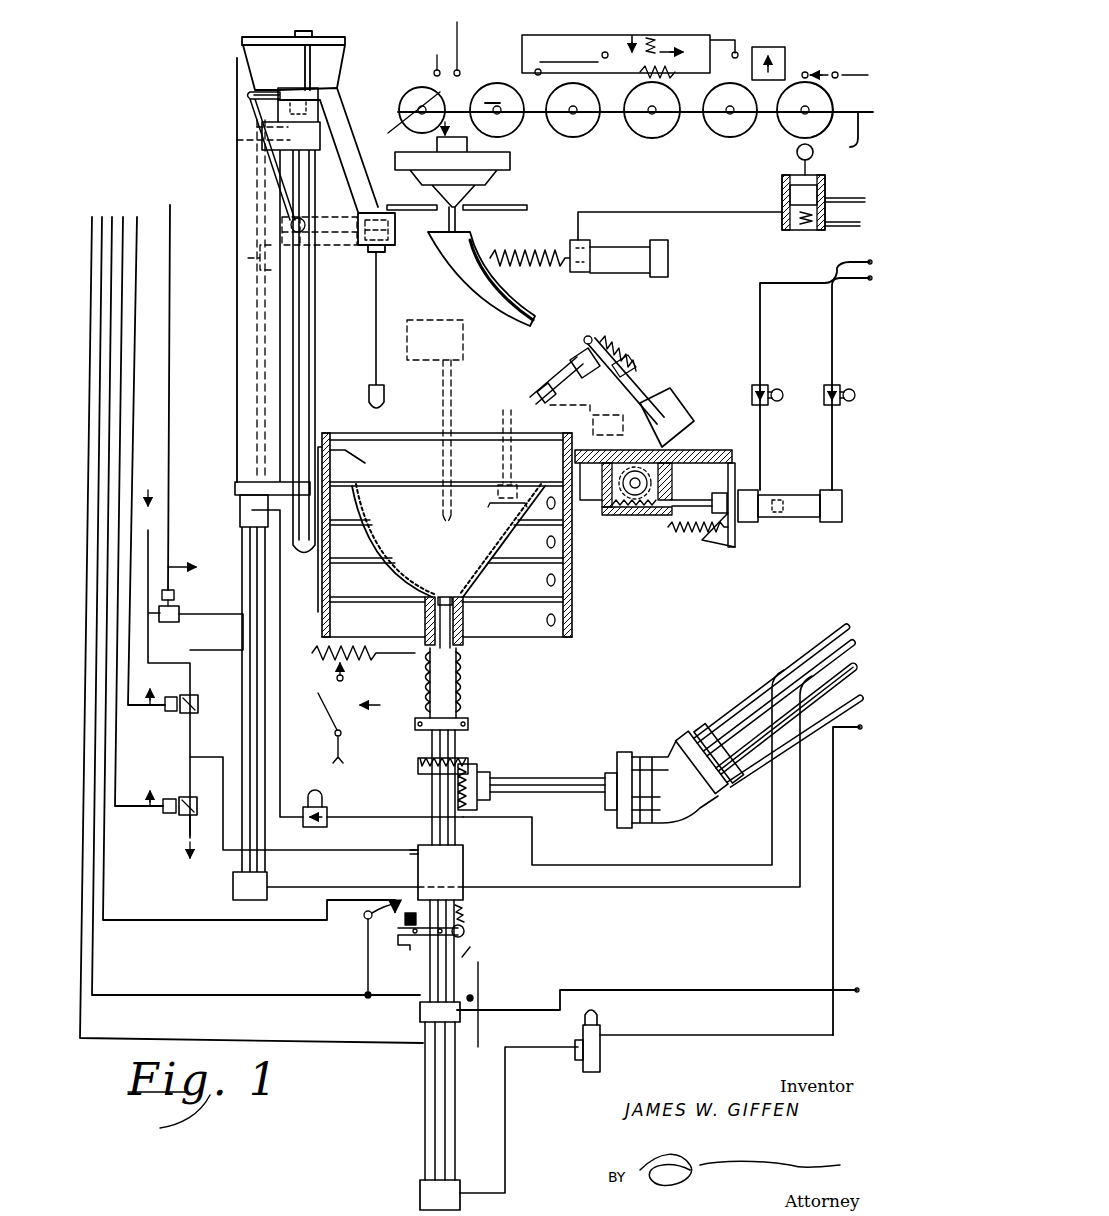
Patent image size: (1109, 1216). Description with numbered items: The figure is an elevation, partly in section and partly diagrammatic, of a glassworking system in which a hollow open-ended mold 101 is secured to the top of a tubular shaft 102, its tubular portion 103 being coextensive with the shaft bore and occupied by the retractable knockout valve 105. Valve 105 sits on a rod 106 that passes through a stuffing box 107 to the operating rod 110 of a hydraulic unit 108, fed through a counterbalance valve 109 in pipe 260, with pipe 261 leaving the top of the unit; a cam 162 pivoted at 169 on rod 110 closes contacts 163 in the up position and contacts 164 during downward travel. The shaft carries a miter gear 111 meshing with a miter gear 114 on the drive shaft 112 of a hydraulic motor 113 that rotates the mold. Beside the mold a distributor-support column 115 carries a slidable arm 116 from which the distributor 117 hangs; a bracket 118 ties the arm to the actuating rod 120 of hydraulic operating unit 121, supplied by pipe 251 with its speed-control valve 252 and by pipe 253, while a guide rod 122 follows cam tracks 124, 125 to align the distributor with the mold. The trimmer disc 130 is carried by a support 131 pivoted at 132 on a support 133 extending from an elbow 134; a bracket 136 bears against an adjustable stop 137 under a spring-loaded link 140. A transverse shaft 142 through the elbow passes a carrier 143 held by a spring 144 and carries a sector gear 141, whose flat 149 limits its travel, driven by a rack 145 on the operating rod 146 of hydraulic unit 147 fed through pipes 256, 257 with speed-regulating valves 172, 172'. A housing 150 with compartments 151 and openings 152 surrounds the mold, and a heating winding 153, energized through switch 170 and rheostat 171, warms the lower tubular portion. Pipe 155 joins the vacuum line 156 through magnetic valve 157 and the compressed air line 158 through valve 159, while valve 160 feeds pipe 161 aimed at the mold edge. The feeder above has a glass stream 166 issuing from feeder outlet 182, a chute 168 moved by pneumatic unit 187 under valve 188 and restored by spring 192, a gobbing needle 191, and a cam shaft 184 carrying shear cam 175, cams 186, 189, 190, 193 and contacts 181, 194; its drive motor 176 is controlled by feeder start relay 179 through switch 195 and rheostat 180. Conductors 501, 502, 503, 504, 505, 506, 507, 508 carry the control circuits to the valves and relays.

The mold 101 is at (392, 456).
The tubular shaft 102 is at (432, 761).
The tubular portion 103 is at (460, 650).
The valve 105 is at (466, 553).
The rod 106 is at (440, 626).
The stuffing box 107 is at (455, 878).
The hydraulic unit 108 is at (428, 1041).
The counterbalance valve 109 is at (600, 1058).
The operating rod 110 is at (437, 972).
The miter gear 111 is at (464, 760).
The drive shaft 112 is at (560, 797).
The hydraulic motor 113 is at (665, 757).
The miter gear 114 is at (478, 782).
The distributor-support column 115 is at (308, 322).
The arm 116 is at (357, 168).
The distributor 117 is at (384, 390).
The bracket 118 is at (248, 141).
The actuating rod 120 is at (258, 212).
The hydraulic operating unit 121 is at (242, 661).
The guide rod 122 is at (250, 94).
The cam track 124 is at (242, 63).
The cam track 125 is at (330, 63).
The disc 130 is at (537, 395).
The support 131 is at (563, 367).
The pivot 132 is at (585, 341).
The support 133 is at (642, 390).
The elbow 134 is at (668, 422).
The bracket 136 is at (578, 380).
The stop 137 is at (620, 338).
The spring-loaded link 140 is at (640, 352).
The sector gear 141 is at (638, 488).
The transverse shaft 142 is at (650, 495).
The carrier 143 is at (596, 470).
The spring 144 is at (690, 534).
The rack 145 is at (680, 550).
The operating rod 146 is at (705, 500).
The hydraulic unit 147 is at (800, 517).
The flat 149 is at (648, 490).
The housing 150 is at (560, 638).
The compartment 151 is at (560, 602).
The opening 152 is at (560, 645).
The heating winding 153 is at (462, 680).
The pipe 155 is at (325, 851).
The vacuum line 156 is at (185, 830).
The magnetic valve 157 is at (190, 797).
The compressed air line 158 is at (150, 545).
The magnetic valve 159 is at (198, 703).
The valve 160 is at (174, 610).
The pipe 161 is at (228, 618).
The cam 162 is at (468, 918).
The contacts 163 is at (381, 950).
The contacts 164 is at (476, 962).
The glass stream 166 is at (452, 228).
The chute 168 is at (458, 262).
The pivot 169 is at (465, 933).
The switch 170 is at (317, 713).
The rheostat 171 is at (340, 660).
The speed-regulating valve 172 is at (820, 416).
The speed-regulating valve 172' is at (790, 382).
The shear cam 175 is at (669, 105).
The drive motor 176 is at (409, 77).
The feeder start relay 179 is at (628, 38).
The rheostat 180 is at (640, 85).
The contacts 181 is at (600, 80).
The feeder outlet 182 is at (492, 200).
The cam shaft 184 is at (850, 157).
The cam 186 is at (590, 105).
The pneumatic unit 187 is at (640, 255).
The valve 188 is at (782, 192).
The cam 189 is at (822, 105).
The needle cam 190 is at (747, 105).
The gobbing needle 191 is at (452, 158).
The spring 192 is at (556, 265).
The cam 193 is at (514, 105).
The contacts 194 is at (536, 128).
The switch 195 is at (833, 68).
The pipe 251 is at (815, 648).
The speed-control valve 252 is at (373, 796).
The pipe 253 is at (798, 676).
The pipe 256 is at (825, 383).
The pipe 257 is at (835, 290).
The pipe 260 is at (833, 961).
The pipe 261 is at (642, 955).
The conductor 501 is at (92, 273).
The conductor 502 is at (102, 292).
The conductor 503 is at (112, 318).
The conductor 504 is at (123, 340).
The conductor 505 is at (137, 365).
The conductor 506 is at (164, 386).
The conductor 507 is at (457, 40).
The conductor 508 is at (437, 56).